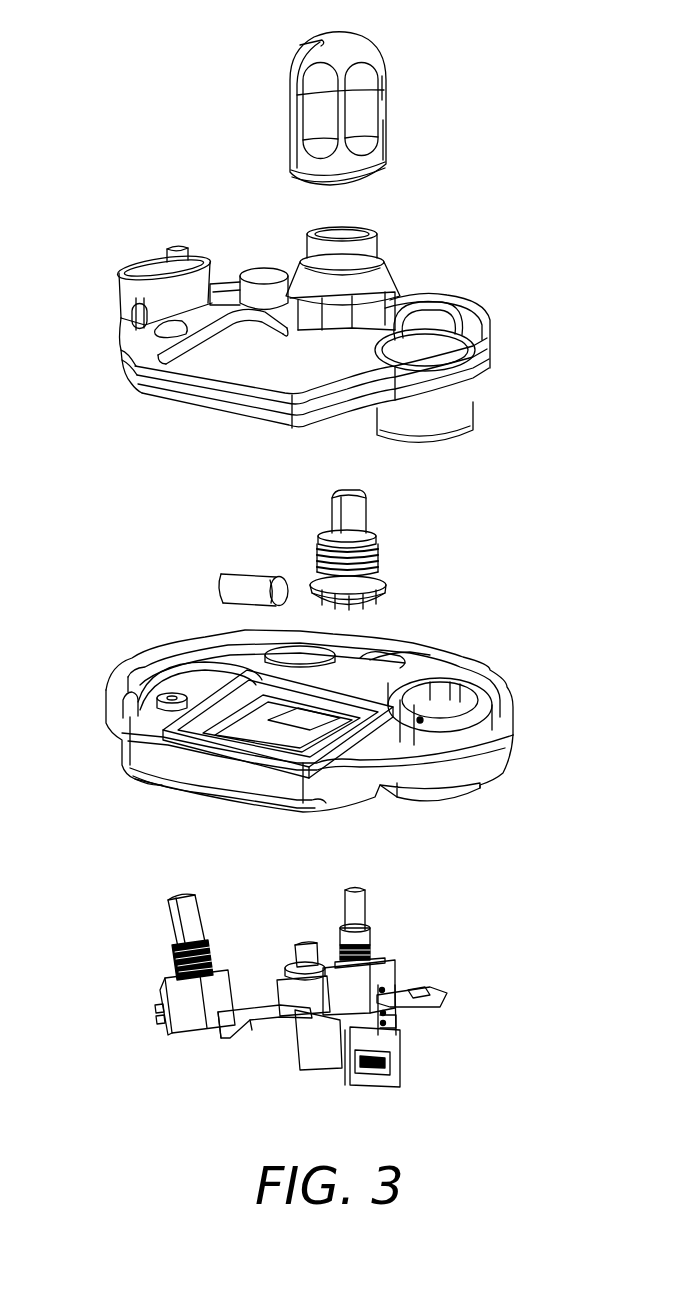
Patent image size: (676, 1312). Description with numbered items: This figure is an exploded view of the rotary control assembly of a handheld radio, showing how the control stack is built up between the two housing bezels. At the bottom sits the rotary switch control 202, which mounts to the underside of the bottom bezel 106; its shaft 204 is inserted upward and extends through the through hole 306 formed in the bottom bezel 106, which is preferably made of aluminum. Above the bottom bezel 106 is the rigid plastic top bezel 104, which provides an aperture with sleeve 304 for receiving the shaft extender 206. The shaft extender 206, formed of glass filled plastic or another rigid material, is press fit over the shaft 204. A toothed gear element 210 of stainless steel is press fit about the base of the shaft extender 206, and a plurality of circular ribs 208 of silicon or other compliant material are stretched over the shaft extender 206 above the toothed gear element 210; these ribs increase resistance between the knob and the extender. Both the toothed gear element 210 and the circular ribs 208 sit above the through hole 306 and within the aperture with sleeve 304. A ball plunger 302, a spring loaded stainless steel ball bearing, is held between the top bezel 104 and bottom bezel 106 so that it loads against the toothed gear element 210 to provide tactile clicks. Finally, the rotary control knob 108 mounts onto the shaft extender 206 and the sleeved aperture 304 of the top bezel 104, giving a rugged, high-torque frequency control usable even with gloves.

The top bezel 104 is at (125, 386).
The bottom bezel 106 is at (105, 711).
The rotary control knob 108 is at (357, 36).
The rotary switch control 202 is at (397, 968).
The shaft 204 is at (368, 906).
The shaft extender 206 is at (368, 512).
The circular ribs 208 is at (380, 554).
The toothed gear element 210 is at (388, 590).
The ball plunger 302 is at (217, 589).
The aperture with sleeve 304 is at (380, 268).
The through hole 306 is at (400, 655).